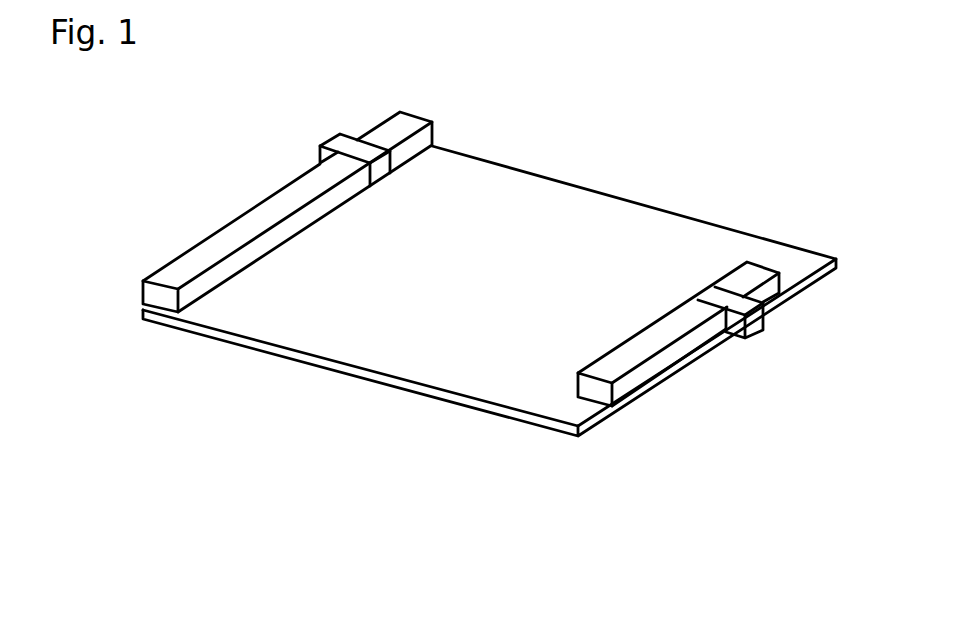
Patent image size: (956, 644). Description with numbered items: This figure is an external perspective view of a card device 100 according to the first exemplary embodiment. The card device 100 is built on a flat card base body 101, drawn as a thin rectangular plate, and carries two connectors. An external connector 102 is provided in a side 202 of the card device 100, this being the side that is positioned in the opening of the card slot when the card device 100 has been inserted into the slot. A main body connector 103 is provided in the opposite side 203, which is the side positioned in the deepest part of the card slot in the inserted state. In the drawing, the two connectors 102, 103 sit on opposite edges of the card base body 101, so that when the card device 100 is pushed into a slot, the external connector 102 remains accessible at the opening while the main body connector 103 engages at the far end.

The card device 100 is at (529, 141).
The card base body 101 is at (653, 208).
The external connector 102 is at (320, 146).
The main body connector 103 is at (757, 318).
The side 202 is at (143, 306).
The side 203 is at (607, 415).